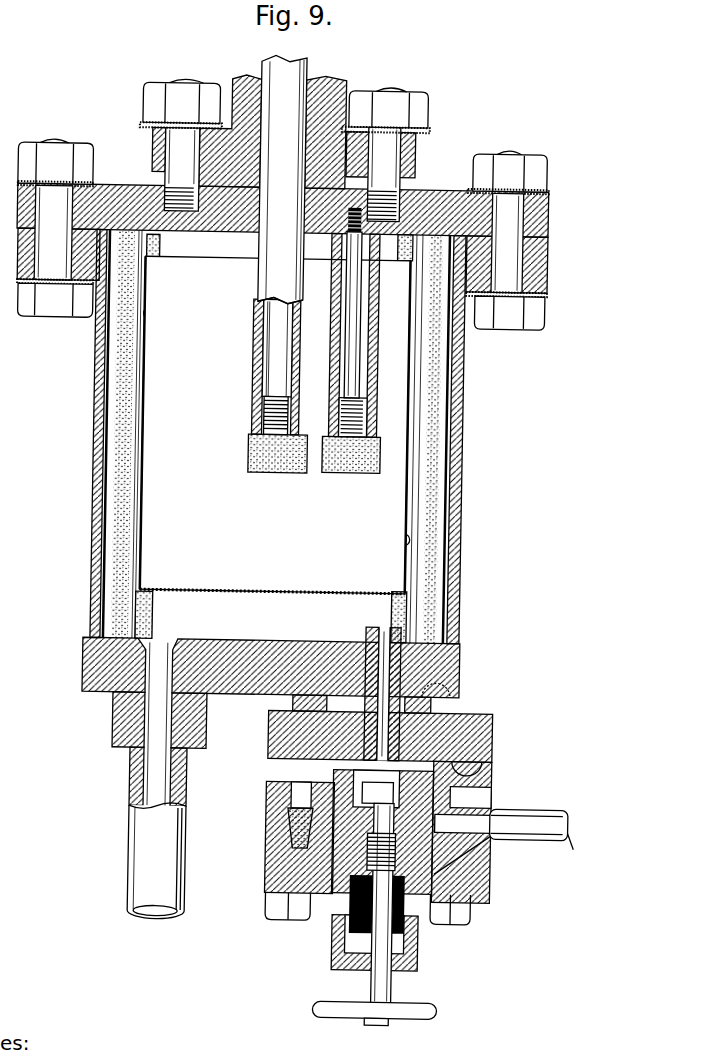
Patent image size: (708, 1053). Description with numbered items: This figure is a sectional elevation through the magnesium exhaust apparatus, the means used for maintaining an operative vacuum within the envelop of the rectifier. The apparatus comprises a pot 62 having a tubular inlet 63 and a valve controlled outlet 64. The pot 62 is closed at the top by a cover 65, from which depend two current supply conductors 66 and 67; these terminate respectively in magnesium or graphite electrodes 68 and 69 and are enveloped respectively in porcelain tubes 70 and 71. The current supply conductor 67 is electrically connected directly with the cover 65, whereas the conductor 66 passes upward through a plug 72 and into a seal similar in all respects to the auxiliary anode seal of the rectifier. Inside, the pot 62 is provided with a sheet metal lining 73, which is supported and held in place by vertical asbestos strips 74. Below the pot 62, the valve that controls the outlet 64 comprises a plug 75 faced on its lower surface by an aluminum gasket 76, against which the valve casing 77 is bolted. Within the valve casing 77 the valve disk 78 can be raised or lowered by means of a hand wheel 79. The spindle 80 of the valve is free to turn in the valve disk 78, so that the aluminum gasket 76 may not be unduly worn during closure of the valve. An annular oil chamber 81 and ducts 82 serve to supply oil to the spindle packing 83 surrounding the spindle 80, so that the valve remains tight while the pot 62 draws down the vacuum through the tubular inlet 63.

The pot 62 is at (465, 449).
The tubular inlet 63 is at (135, 901).
The valve controlled outlet 64 is at (389, 665).
The cover 65 is at (422, 194).
The current supply conductor 66 is at (272, 357).
The current supply conductor 67 is at (349, 363).
The magnesium or graphite electrode 68 is at (286, 473).
The magnesium or graphite electrode 69 is at (351, 472).
The porcelain tube 70 is at (253, 297).
The porcelain tube 71 is at (364, 289).
The plug 72 is at (310, 81).
The sheet metal lining 73 is at (238, 592).
The vertical asbestos strips 74 is at (155, 616).
The plug 75 is at (473, 712).
The aluminum gasket 76 is at (488, 760).
The valve casing 77 is at (291, 874).
The valve disk 78 is at (355, 780).
The hand wheel 79 is at (322, 1005).
The spindle 80 is at (497, 787).
The annular oil chamber 81 is at (295, 829).
The ducts 82 is at (486, 867).
The spindle packing 83 is at (343, 930).